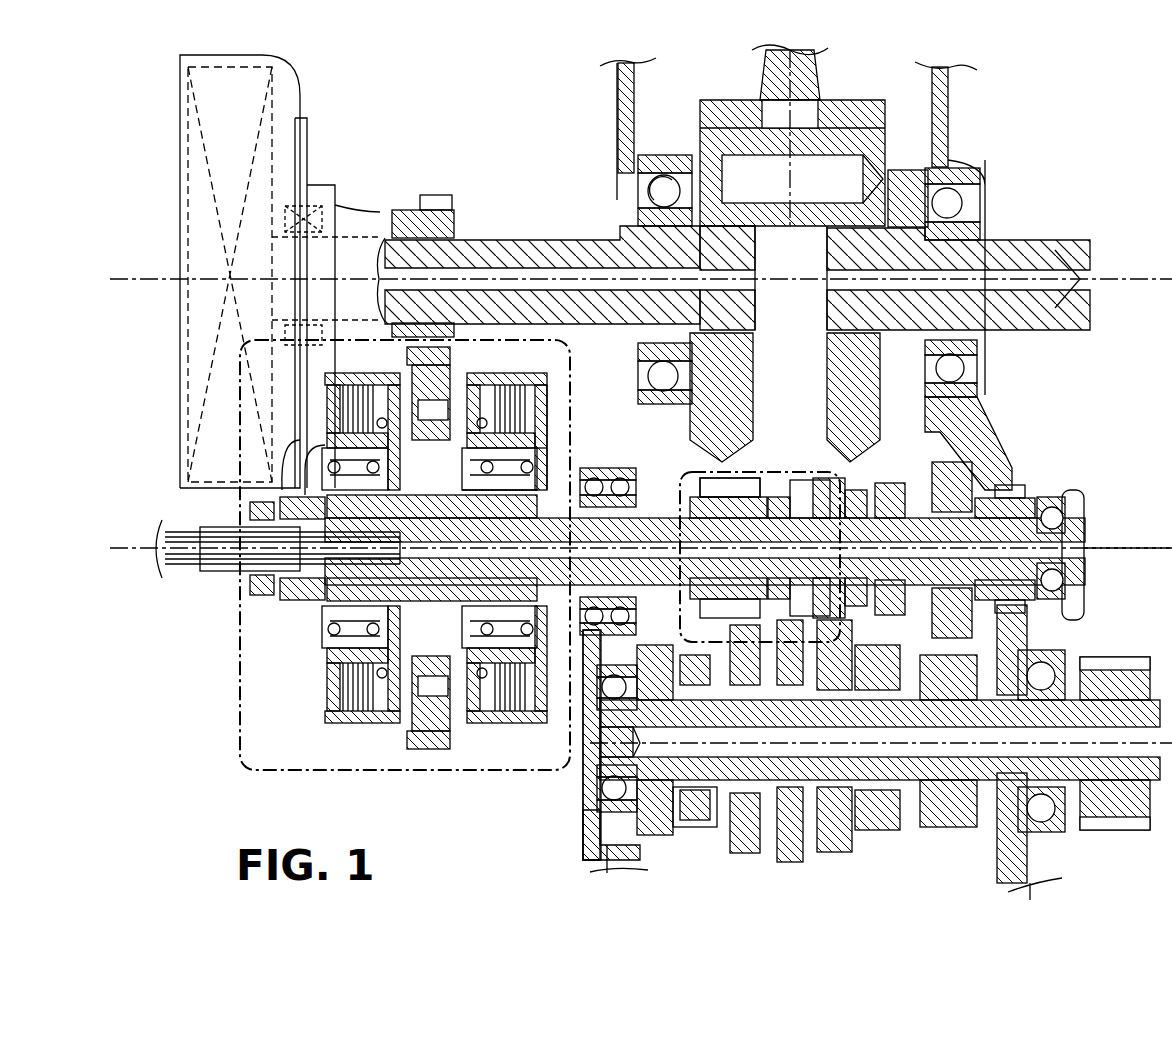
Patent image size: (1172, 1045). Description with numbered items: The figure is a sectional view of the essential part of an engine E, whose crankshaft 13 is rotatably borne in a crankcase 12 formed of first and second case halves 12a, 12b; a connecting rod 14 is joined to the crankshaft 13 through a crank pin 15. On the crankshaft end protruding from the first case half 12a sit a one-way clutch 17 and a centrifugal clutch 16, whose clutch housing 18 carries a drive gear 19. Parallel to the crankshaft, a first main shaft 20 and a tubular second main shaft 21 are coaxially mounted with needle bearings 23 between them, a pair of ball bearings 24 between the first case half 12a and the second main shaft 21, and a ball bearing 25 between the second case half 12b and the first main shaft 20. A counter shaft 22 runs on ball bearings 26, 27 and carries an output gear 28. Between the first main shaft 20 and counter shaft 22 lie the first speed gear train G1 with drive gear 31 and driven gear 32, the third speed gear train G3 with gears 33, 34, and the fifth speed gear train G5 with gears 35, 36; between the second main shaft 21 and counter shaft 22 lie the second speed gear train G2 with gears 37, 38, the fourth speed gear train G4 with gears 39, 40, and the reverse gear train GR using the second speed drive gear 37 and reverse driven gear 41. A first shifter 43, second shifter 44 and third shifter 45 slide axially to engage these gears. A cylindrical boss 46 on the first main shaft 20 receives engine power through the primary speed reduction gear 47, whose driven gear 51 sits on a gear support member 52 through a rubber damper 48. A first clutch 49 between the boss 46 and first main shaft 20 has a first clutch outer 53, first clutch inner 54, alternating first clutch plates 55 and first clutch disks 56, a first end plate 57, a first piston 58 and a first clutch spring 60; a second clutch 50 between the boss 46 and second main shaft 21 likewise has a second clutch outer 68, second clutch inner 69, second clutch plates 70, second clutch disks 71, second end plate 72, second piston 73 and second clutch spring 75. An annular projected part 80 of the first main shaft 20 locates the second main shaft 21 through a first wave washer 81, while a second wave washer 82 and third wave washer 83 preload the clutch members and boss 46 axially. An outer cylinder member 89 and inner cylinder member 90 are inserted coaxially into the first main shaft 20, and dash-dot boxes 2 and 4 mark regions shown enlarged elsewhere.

The twin clutch 2 is at (236, 742).
The shift mechanism 4 is at (790, 468).
The crankcase 12 is at (1020, 440).
The first case half 12a is at (620, 133).
The second case half 12b is at (955, 165).
The crankshaft 13 is at (545, 238).
The connecting rod 14 is at (810, 80).
The crank pin 15 is at (722, 100).
The centrifugal clutch 16 is at (302, 108).
The one-way clutch 17 is at (312, 190).
The clutch housing 18 is at (297, 80).
The drive gear 19 is at (432, 195).
The first main shaft 20 is at (1084, 548).
The second main shaft 21 is at (712, 460).
The counter shaft 22 is at (605, 700).
The needle bearings 23 is at (705, 551).
The ball bearings 24 is at (595, 468).
The ball bearing 25 is at (1066, 505).
The ball bearing 26 is at (600, 800).
The ball bearing 27 is at (1045, 665).
The output gear 28 is at (1135, 657).
The 1st speed drive gear 31 is at (1020, 510).
The 1st speed driven gear 32 is at (1010, 878).
The 3rd speed drive gear 33 is at (830, 480).
The 3rd speed driven gear 34 is at (832, 850).
The 5th speed drive gear 35 is at (940, 460).
The 5th speed driven gear 36 is at (940, 828).
The 2nd speed drive gear 37 is at (725, 478).
The 2nd speed driven gear 38 is at (745, 858).
The 4th speed drive gear 39 is at (650, 478).
The 4th speed driven gear 40 is at (655, 840).
The reverse driven gear 41 is at (790, 865).
The first shifter 43 is at (890, 485).
The second shifter 44 is at (738, 798).
The third shifter 45 is at (870, 822).
The cylindrical boss 46 is at (318, 598).
The primary speed reduction gear 47 is at (450, 190).
The rubber damper 48 is at (422, 742).
The first clutch 49 is at (322, 738).
The second clutch 50 is at (500, 740).
The driven gear 51 is at (435, 750).
The gear support member 52 is at (448, 735).
The first clutch outer 53 is at (378, 385).
The first clutch inner 54 is at (328, 650).
The first clutch plates 55 is at (368, 385).
The first clutch disks 56 is at (368, 711).
The first end plate 57 is at (330, 400).
The first piston 58 is at (379, 749).
The first clutch spring 60 is at (320, 645).
The second clutch outer 68 is at (470, 385).
The second clutch inner 69 is at (540, 668).
The second clutch plates 70 is at (515, 385).
The second clutch disks 71 is at (518, 711).
The second end plate 72 is at (550, 400).
The second piston 73 is at (515, 728).
The second clutch spring 75 is at (540, 450).
The annular projected part 80 is at (806, 546).
The first wave washer 81 is at (768, 497).
The second wave washer 82 is at (537, 485).
The third wave washer 83 is at (340, 480).
The outer cylinder member 89 is at (185, 528).
The inner cylinder member 90 is at (195, 562).
The engine E is at (598, 88).
The 1st speed gear train G1 is at (1032, 880).
The 2nd speed gear train G2 is at (732, 832).
The 3rd speed gear train G3 is at (848, 845).
The 4th speed gear train G4 is at (640, 842).
The 5th speed gear train G5 is at (960, 833).
The reverse gear train GR is at (794, 842).